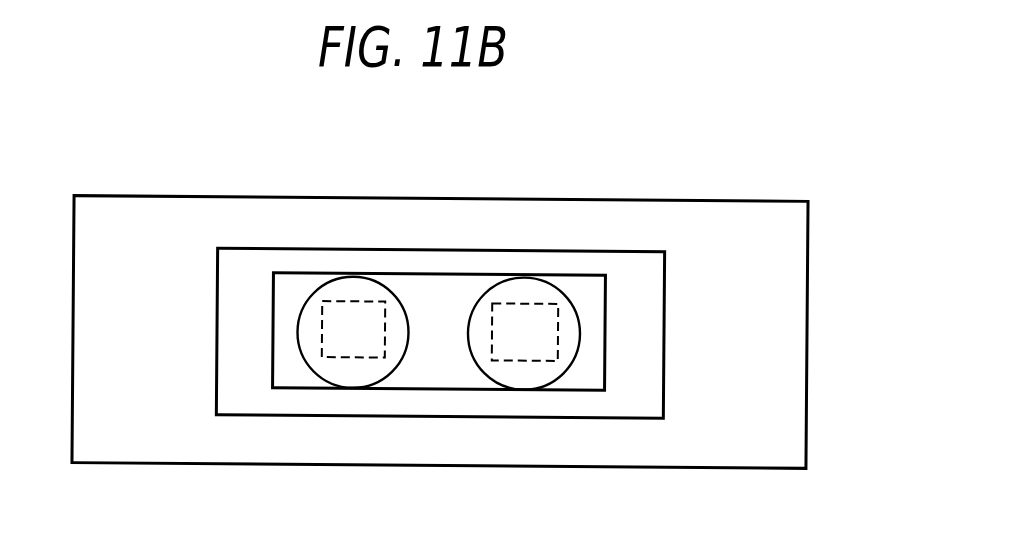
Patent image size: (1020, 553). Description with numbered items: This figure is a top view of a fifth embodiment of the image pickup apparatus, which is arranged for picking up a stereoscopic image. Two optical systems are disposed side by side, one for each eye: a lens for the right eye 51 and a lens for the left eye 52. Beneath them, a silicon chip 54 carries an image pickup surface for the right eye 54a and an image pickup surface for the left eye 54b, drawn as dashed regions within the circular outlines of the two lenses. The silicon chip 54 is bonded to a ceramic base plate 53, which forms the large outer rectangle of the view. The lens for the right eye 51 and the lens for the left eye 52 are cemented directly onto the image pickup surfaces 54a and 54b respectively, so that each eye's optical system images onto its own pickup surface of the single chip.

The optical system for the right eye 51 is at (527, 290).
The optical system for the left eye 52 is at (346, 283).
The ceramic base plate 53 is at (797, 344).
The silicon chip 54 is at (597, 333).
The image pickup surface for the right eye 54a is at (526, 360).
The image pickup surface for the left eye 54b is at (350, 358).